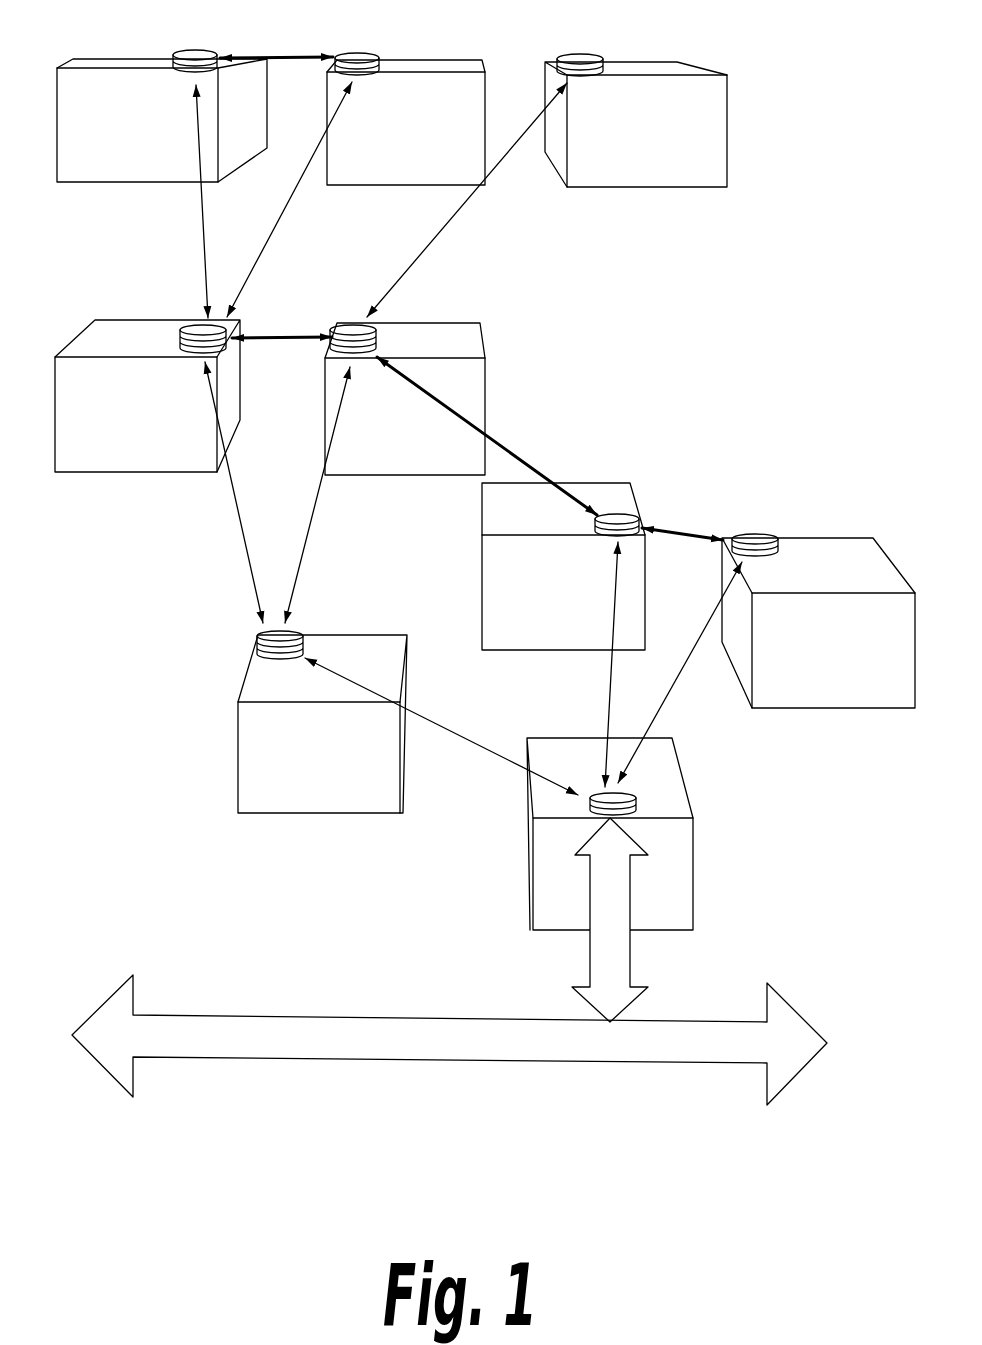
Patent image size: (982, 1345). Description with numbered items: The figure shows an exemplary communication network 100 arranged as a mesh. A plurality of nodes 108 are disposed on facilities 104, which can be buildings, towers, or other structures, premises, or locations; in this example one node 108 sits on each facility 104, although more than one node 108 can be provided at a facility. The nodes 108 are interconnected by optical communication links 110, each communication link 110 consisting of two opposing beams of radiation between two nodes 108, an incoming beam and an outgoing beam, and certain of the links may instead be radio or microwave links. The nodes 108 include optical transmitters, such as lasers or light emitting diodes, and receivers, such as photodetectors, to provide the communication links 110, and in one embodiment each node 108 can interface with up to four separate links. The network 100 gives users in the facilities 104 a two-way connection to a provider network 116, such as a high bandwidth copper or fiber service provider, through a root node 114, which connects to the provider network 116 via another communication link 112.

The communication network 100 is at (772, 275).
The facilities 104 is at (485, 494).
The nodes 108 is at (200, 55).
The communication links 110 is at (203, 248).
The communication link 112 is at (612, 902).
The root node 114 is at (625, 795).
The provider network 116 is at (449, 1040).